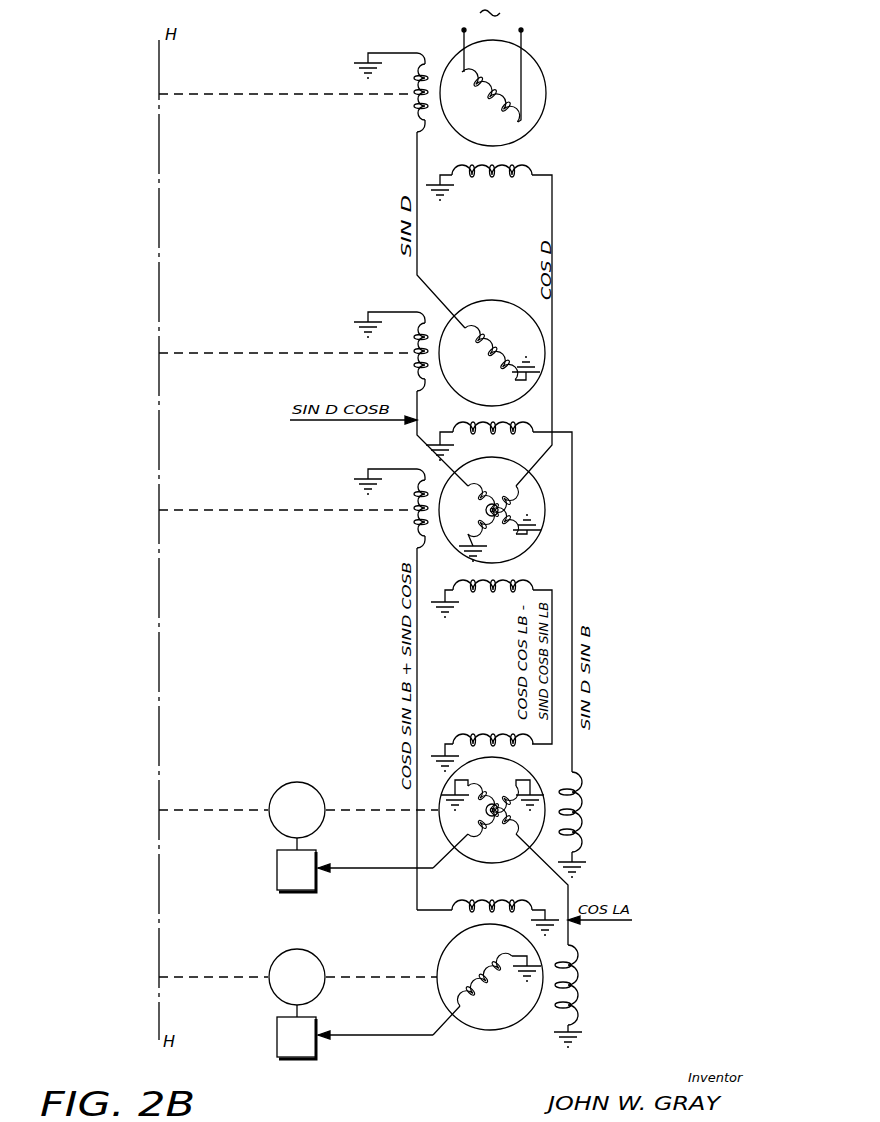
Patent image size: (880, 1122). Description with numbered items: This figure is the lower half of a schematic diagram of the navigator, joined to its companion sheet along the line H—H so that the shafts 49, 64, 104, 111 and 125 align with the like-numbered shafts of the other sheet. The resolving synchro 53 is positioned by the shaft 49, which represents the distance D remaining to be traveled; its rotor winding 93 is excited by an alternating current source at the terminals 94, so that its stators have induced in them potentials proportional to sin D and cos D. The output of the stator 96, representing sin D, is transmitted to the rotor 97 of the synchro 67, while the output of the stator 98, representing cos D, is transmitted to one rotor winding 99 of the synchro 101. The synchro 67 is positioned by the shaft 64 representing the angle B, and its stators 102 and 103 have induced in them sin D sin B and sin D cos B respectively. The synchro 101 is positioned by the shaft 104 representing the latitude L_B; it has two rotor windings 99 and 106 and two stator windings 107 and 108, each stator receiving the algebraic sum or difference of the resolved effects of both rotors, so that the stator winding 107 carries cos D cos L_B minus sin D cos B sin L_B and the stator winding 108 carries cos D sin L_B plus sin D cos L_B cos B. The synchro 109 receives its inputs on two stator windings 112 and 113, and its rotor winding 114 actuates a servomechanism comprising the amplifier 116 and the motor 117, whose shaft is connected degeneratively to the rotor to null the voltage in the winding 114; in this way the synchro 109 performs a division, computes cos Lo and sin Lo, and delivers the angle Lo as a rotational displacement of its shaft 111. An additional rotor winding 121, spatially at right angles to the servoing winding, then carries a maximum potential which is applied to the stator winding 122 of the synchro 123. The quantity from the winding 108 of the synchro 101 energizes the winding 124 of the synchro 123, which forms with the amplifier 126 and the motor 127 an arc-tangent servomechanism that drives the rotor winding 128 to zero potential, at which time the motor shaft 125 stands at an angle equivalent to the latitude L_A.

The shaft 49 is at (194, 95).
The synchro 53 is at (582, 83).
The rotor winding 93 is at (488, 113).
The terminals 94 is at (530, 18).
The stator 96 is at (408, 115).
The stator 98 is at (492, 178).
The synchro 67 is at (592, 345).
The rotor 97 is at (512, 347).
The shaft 64 is at (194, 354).
The stator 103 is at (417, 375).
The stator 102 is at (497, 433).
The shaft 104 is at (200, 511).
The stator winding 108 is at (417, 532).
The rotor winding 99 is at (508, 479).
The rotor winding 106 is at (472, 510).
The synchro 101 is at (604, 520).
The stator winding 107 is at (505, 606).
The stator winding 113 is at (505, 729).
The shaft 111 is at (206, 810).
The motor 117 is at (313, 798).
The amplifier 116 is at (314, 858).
The rotor winding 114 is at (473, 834).
The winding 121 is at (480, 787).
The synchro 109 is at (612, 791).
The stator winding 112 is at (575, 836).
The winding 124 is at (503, 899).
The shaft 125 is at (198, 977).
The motor 127 is at (313, 965).
The amplifier 126 is at (314, 1027).
The synchro 123 is at (616, 974).
The rotor winding 128 is at (488, 959).
The stator winding 122 is at (575, 992).